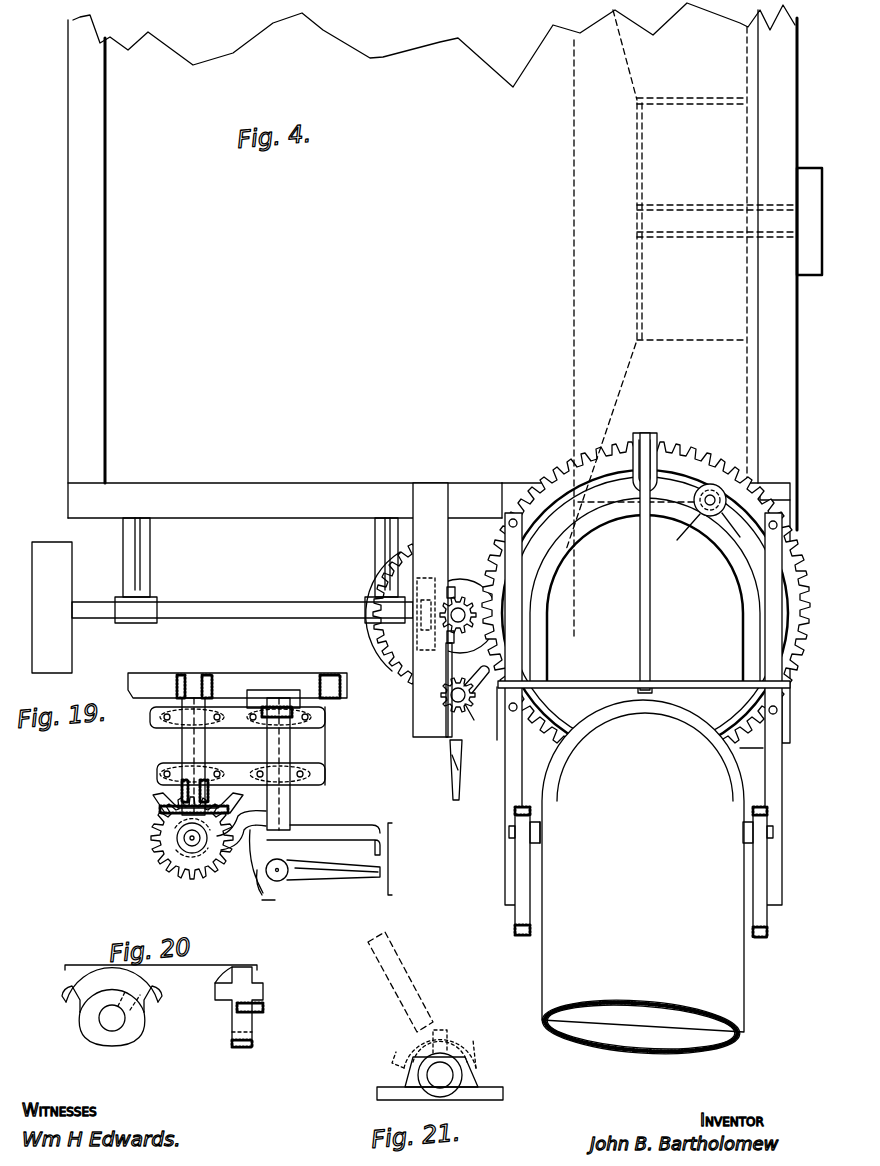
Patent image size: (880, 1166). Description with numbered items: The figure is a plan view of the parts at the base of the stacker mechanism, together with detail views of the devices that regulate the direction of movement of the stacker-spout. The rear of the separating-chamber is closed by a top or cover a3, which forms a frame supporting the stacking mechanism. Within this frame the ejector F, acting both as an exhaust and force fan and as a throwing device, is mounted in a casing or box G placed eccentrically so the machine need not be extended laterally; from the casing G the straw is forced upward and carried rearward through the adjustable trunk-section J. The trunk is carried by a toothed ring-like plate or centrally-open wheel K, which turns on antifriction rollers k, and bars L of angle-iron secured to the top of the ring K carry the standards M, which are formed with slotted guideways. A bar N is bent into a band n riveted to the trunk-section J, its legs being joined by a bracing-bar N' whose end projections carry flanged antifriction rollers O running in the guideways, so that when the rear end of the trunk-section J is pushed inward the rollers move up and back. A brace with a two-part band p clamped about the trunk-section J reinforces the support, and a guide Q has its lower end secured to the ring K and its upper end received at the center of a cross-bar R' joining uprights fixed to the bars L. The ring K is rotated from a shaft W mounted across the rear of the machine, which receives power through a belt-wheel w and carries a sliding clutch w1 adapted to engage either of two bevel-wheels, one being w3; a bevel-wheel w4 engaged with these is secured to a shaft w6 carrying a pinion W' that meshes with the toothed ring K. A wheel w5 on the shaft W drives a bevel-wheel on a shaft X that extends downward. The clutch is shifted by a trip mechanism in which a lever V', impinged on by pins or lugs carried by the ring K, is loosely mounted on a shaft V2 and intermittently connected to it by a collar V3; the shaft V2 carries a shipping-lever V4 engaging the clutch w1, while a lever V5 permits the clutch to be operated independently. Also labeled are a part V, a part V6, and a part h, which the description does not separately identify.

In FIG. 4, the top or cover a3 is at (431, 260).
In FIG. 4, the ejector F is at (704, 265).
In FIG. 4, the casing or box G is at (757, 110).
In FIG. 4, the shaft W is at (242, 570).
In FIG. 19, the shaft W is at (156, 882).
In FIG. 4, the belt-wheel w is at (52, 607).
In FIG. 4, the pinion W' is at (419, 611).
In FIG. 19, the pinion W' is at (237, 671).
In FIG. 4, the shaft X is at (400, 660).
In FIG. 4, the bevel-wheel w4 is at (464, 590).
In FIG. 19, the bevel-wheel w4 is at (168, 808).
In FIG. 4, the wheel w5 is at (452, 645).
In FIG. 19, the shaft w6 is at (192, 752).
In FIG. 19, the sliding clutch w1 is at (178, 840).
In FIG. 19, the bevel-wheel w3 is at (218, 862).
In FIG. 4, the lever blade V is at (474, 756).
In FIG. 4, the shaft V2 is at (450, 698).
In FIG. 19, the shaft V2 is at (290, 752).
In FIG. 21, the shaft V2 is at (447, 1077).
In FIG. 20, the collar V3 is at (135, 1036).
In FIG. 19, the shipping-lever V4 is at (264, 886).
In FIG. 4, the lever V5 is at (450, 760).
In FIG. 19, the lever V5 is at (330, 880).
In FIG. 19, the hook arm V6 is at (360, 830).
In FIG. 21, the trip lever V' is at (392, 982).
In FIG. 4, the toothed ring K is at (558, 476).
In FIG. 4, the bar N is at (645, 626).
In FIG. 4, the bracing-bar N' is at (497, 843).
In FIG. 4, the band p is at (612, 527).
In FIG. 4, the roller h is at (722, 492).
In FIG. 4, the antifriction rollers k is at (532, 615).
In FIG. 4, the guide Q is at (651, 597).
In FIG. 4, the cross-bar R' is at (644, 670).
In FIG. 4, the bars L is at (506, 775).
In FIG. 4, the trunk-section J is at (642, 880).
In FIG. 4, the band n is at (634, 725).
In FIG. 4, the standards M is at (520, 920).
In FIG. 4, the antifriction rollers O is at (509, 832).